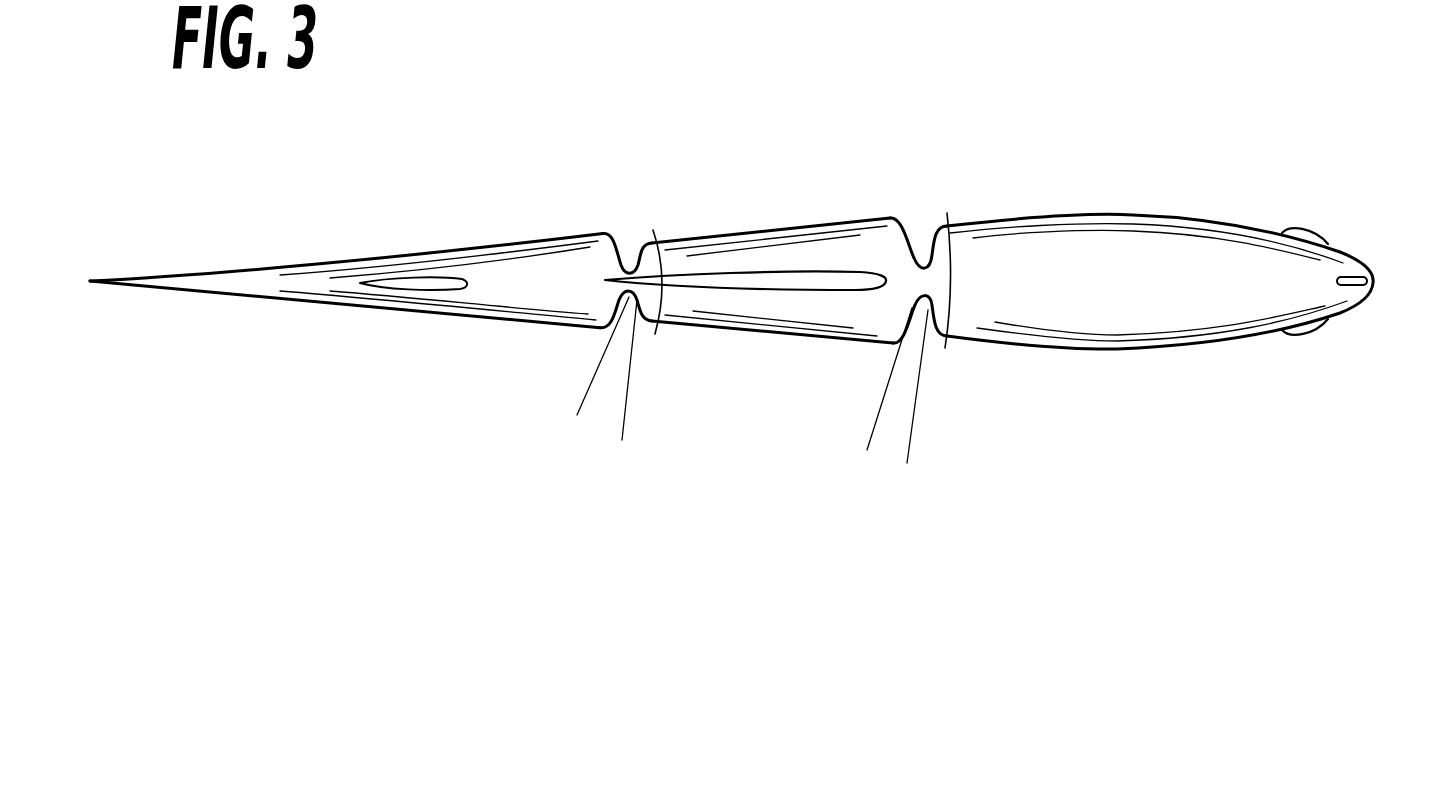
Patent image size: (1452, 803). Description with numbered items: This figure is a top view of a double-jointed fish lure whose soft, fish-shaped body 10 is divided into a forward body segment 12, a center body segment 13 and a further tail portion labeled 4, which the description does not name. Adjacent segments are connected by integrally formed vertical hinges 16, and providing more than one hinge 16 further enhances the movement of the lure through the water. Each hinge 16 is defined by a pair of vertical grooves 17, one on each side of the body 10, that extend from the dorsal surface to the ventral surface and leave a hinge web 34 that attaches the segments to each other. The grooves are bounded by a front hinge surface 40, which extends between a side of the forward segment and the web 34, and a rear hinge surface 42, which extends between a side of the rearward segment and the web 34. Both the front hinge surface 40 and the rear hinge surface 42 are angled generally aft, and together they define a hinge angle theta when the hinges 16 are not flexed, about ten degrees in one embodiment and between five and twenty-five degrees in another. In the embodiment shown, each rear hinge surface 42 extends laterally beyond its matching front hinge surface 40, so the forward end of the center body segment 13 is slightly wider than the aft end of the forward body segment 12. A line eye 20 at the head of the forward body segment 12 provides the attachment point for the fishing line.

The body 10 is at (532, 57).
The tip portion 4 is at (492, 247).
The center body segment 13 is at (840, 220).
The forward body segment 12 is at (1164, 215).
The vertical hinge 16 is at (669, 268).
The vertical grooves 17 is at (633, 250).
The hinge web 34 is at (627, 289).
The rear hinge surface 42 is at (913, 313).
The front hinge surface 40 is at (955, 321).
The line eye 20 is at (1372, 281).